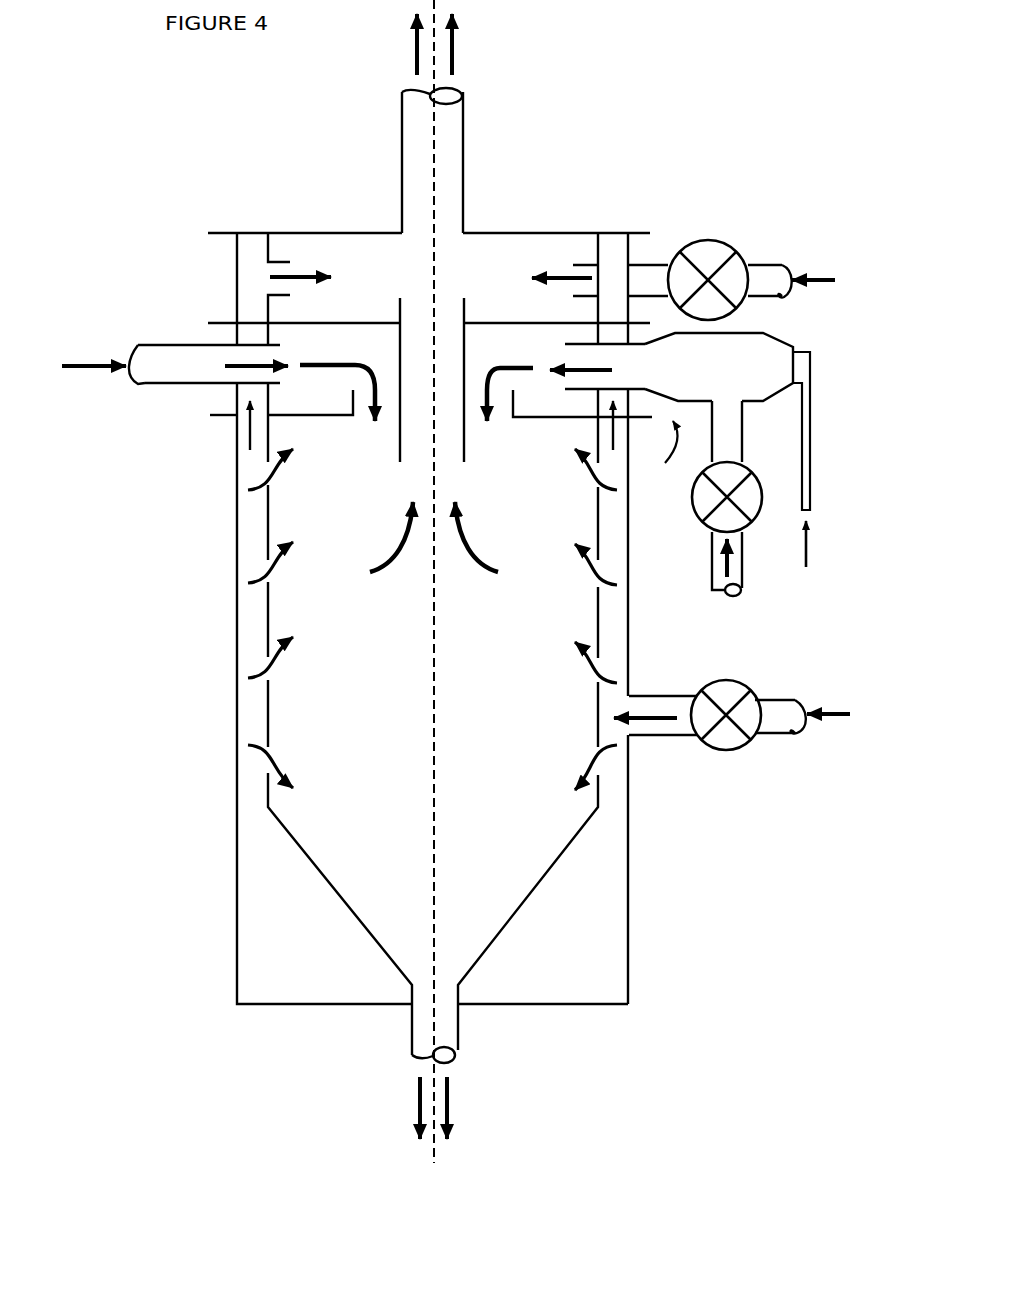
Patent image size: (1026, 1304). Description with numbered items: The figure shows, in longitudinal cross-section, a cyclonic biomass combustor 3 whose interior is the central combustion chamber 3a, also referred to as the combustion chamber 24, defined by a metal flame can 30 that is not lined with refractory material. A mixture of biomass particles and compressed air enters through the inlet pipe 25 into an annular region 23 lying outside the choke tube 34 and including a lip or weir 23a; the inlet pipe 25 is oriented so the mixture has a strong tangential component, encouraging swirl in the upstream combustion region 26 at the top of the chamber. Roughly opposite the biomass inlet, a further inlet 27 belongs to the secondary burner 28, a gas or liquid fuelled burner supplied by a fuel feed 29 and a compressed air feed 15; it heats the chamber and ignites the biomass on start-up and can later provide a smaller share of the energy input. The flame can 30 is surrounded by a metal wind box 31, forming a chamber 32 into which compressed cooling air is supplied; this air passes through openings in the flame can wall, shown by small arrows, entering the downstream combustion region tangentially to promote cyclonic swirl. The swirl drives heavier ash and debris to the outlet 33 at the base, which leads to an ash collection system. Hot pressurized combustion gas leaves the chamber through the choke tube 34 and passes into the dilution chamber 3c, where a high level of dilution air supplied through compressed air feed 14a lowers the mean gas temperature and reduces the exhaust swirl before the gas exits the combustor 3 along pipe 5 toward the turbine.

The combustor 3 is at (512, 686).
The central combustion chamber 3a is at (434, 579).
The dilution chamber 3c is at (363, 260).
The pipe 5 is at (472, 160).
The compressed air feed 14a is at (657, 261).
The compressed air feed 15 is at (707, 566).
The annular region 23 is at (313, 358).
The lip or weir 23a is at (351, 402).
The combustion chamber 24 is at (455, 581).
The inlet pipe 25 is at (169, 335).
The upstream combustion region 26 is at (506, 348).
The inlet 27 is at (639, 343).
The secondary burner 28 is at (751, 342).
The fuel feed 29 is at (795, 478).
The flame can 30 is at (266, 713).
The wind box 31 is at (233, 620).
The chamber 32 is at (616, 793).
The outlet 33 is at (472, 1033).
The choke tube 34 is at (393, 437).